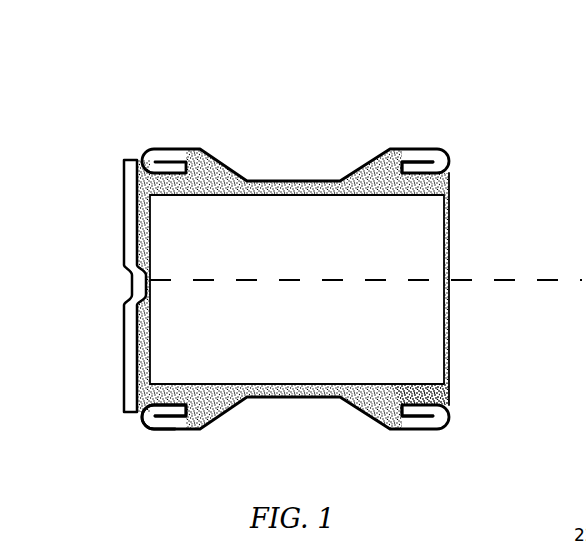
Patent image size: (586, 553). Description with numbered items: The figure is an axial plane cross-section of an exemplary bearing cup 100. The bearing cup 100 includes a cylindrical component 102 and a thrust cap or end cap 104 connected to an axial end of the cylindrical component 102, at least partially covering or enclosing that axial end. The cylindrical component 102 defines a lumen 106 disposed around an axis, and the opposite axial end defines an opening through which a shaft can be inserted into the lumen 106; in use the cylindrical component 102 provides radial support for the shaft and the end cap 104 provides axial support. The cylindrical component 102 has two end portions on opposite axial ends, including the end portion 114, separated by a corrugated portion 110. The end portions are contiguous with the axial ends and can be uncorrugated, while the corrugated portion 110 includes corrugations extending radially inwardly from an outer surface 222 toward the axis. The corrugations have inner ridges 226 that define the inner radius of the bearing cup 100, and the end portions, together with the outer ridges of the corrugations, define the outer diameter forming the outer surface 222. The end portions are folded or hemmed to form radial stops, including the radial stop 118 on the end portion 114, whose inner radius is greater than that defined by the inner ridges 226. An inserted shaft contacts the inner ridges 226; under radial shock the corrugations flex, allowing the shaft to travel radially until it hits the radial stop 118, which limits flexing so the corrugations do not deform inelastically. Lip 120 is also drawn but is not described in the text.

The bearing cup 100 is at (370, 61).
The cylindrical component 102 is at (188, 142).
The end cap 104 is at (122, 360).
The lumen 106 is at (420, 218).
The corrugated portion 110 is at (287, 385).
The end portion 114 is at (415, 416).
The radial stop 118 is at (422, 398).
The flange lip 120 is at (451, 173).
The outer surface 222 is at (512, 277).
The inner ridges 226 is at (144, 424).